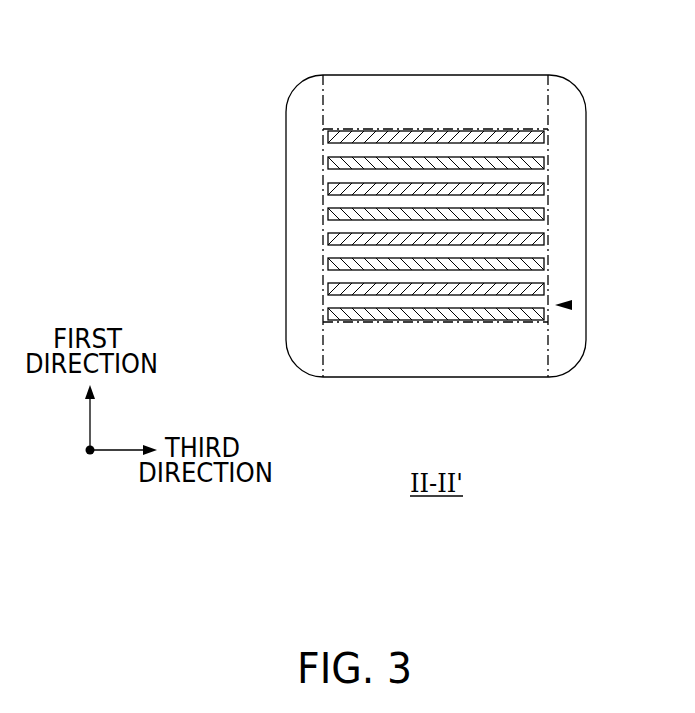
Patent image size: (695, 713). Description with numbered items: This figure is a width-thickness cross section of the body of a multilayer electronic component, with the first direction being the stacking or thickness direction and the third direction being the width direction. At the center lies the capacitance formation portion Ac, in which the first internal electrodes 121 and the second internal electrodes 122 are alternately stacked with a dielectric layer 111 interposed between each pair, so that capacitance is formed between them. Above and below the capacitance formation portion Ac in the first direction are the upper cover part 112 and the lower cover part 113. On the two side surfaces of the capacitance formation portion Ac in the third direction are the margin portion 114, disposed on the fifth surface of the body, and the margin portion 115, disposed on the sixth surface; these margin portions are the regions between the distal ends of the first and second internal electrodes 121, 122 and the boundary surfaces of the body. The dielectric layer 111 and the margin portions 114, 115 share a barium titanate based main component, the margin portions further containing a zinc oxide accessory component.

The dielectric layer 111 is at (365, 150).
The upper cover part 112 is at (398, 78).
The lower cover part 113 is at (403, 358).
The margin portion 114 is at (292, 311).
The margin portion 115 is at (573, 223).
The first internal electrode 121 is at (468, 130).
The second internal electrode 122 is at (508, 200).
The capacitance formation portion Ac is at (572, 305).